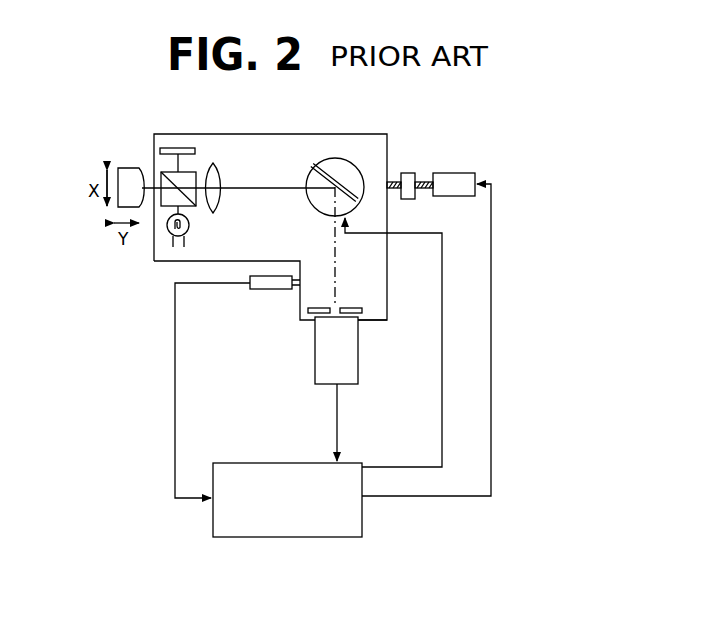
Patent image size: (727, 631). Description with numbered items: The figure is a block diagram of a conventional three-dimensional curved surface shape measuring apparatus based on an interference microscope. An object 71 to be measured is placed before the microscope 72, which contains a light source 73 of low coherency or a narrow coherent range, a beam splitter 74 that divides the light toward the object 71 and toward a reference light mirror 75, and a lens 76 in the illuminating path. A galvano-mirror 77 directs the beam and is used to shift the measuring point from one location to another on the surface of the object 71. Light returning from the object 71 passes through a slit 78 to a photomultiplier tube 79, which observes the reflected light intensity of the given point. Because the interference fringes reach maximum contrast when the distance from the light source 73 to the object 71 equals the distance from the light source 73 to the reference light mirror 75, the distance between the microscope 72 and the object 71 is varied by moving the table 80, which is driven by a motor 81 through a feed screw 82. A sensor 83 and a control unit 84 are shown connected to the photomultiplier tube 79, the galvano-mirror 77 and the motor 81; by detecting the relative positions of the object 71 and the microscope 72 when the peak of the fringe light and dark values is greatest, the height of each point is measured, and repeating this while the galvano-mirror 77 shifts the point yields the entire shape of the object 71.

The object to be measured 71 is at (122, 167).
The microscope 72 is at (277, 143).
The light source 73 is at (168, 230).
The beam splitter 74 is at (161, 174).
The reference light mirror 75 is at (176, 148).
The lens 76 is at (213, 163).
The galvano-mirror 77 is at (338, 159).
The slit 78 is at (355, 307).
The photomultiplier tube 79 is at (315, 373).
The table 80 is at (383, 310).
The motor 81 is at (462, 173).
The feed screw 82 is at (422, 173).
The sensor 83 is at (267, 289).
The control unit 84 is at (363, 518).